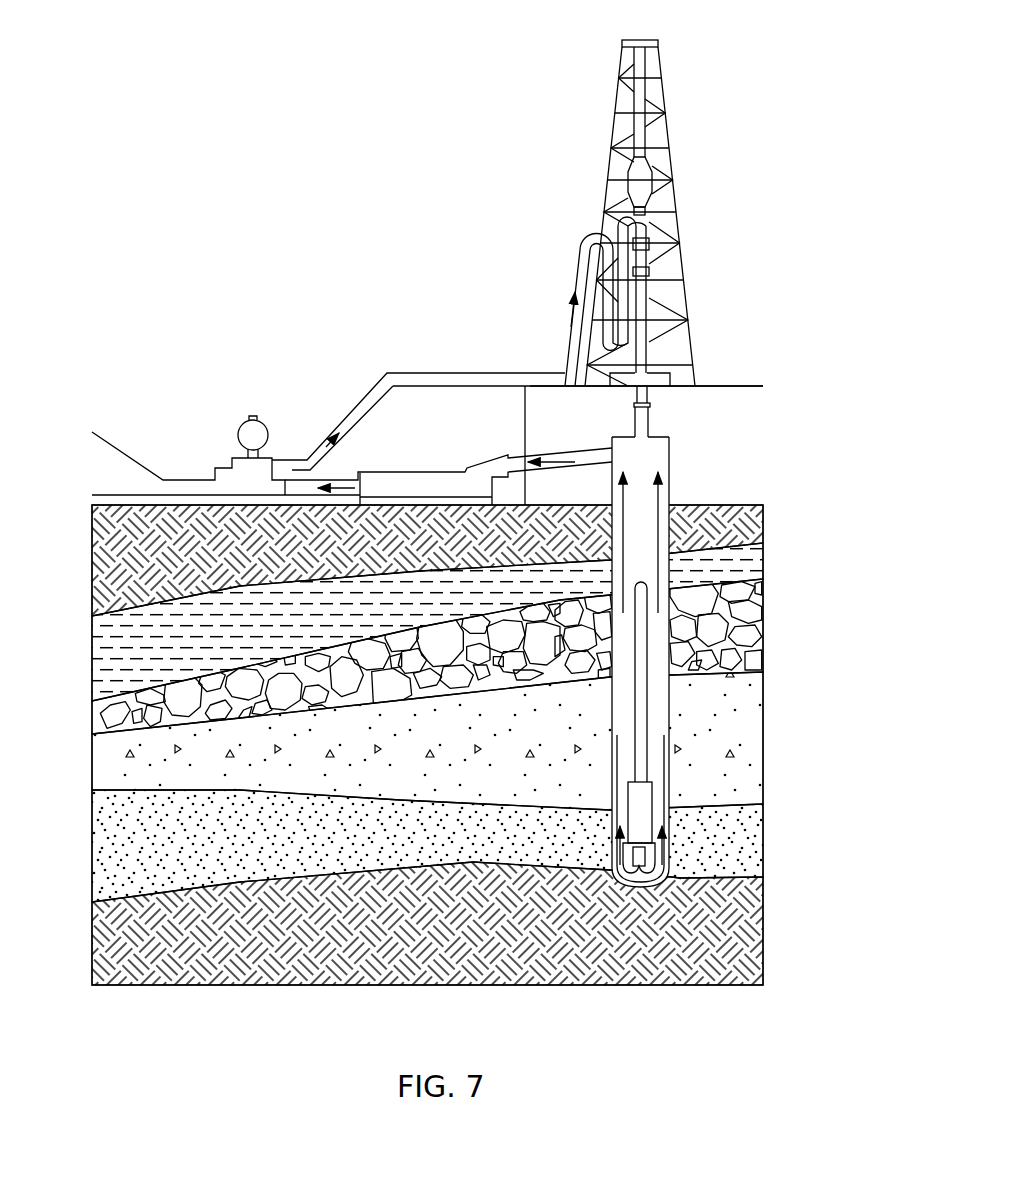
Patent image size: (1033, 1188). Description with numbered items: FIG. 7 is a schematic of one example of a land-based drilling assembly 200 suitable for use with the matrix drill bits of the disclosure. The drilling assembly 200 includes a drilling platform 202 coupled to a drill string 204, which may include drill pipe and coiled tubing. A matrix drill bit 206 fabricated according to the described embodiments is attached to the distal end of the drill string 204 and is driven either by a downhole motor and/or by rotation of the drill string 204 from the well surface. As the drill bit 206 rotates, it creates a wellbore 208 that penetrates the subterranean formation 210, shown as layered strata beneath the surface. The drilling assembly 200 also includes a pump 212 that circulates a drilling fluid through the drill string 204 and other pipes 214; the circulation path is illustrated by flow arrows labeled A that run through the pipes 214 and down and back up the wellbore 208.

The drilling assembly 200 is at (496, 120).
The drilling platform 202 is at (720, 367).
The drill string 204 is at (654, 422).
The matrix drill bit 206 is at (664, 872).
The wellbore 208 is at (672, 755).
The subterranean formation 210 is at (80, 774).
The pump 212 is at (228, 460).
The pipes 214 is at (437, 372).